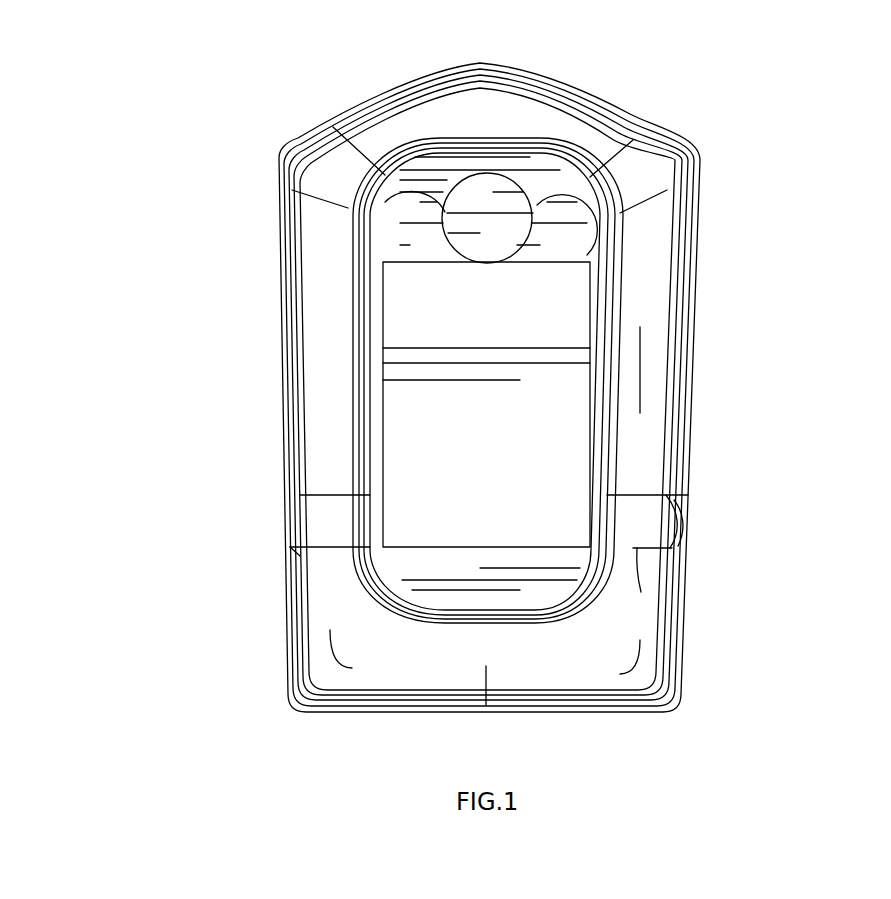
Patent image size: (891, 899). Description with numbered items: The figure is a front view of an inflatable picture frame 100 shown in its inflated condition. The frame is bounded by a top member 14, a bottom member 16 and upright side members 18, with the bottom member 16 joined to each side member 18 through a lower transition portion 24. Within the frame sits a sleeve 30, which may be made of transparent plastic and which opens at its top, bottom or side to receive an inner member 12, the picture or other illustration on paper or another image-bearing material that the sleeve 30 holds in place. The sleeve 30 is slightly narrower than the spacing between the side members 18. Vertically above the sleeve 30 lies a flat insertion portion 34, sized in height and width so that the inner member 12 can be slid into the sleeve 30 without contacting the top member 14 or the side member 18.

The inflatable picture frame 100 is at (240, 177).
The inner member 12 is at (495, 452).
The top member 14 is at (628, 110).
The bottom member 16 is at (287, 587).
The side member 18 is at (283, 367).
The lower transition portion 24 is at (685, 532).
The sleeve 30 is at (598, 292).
The flat insertion portion 34 is at (488, 141).